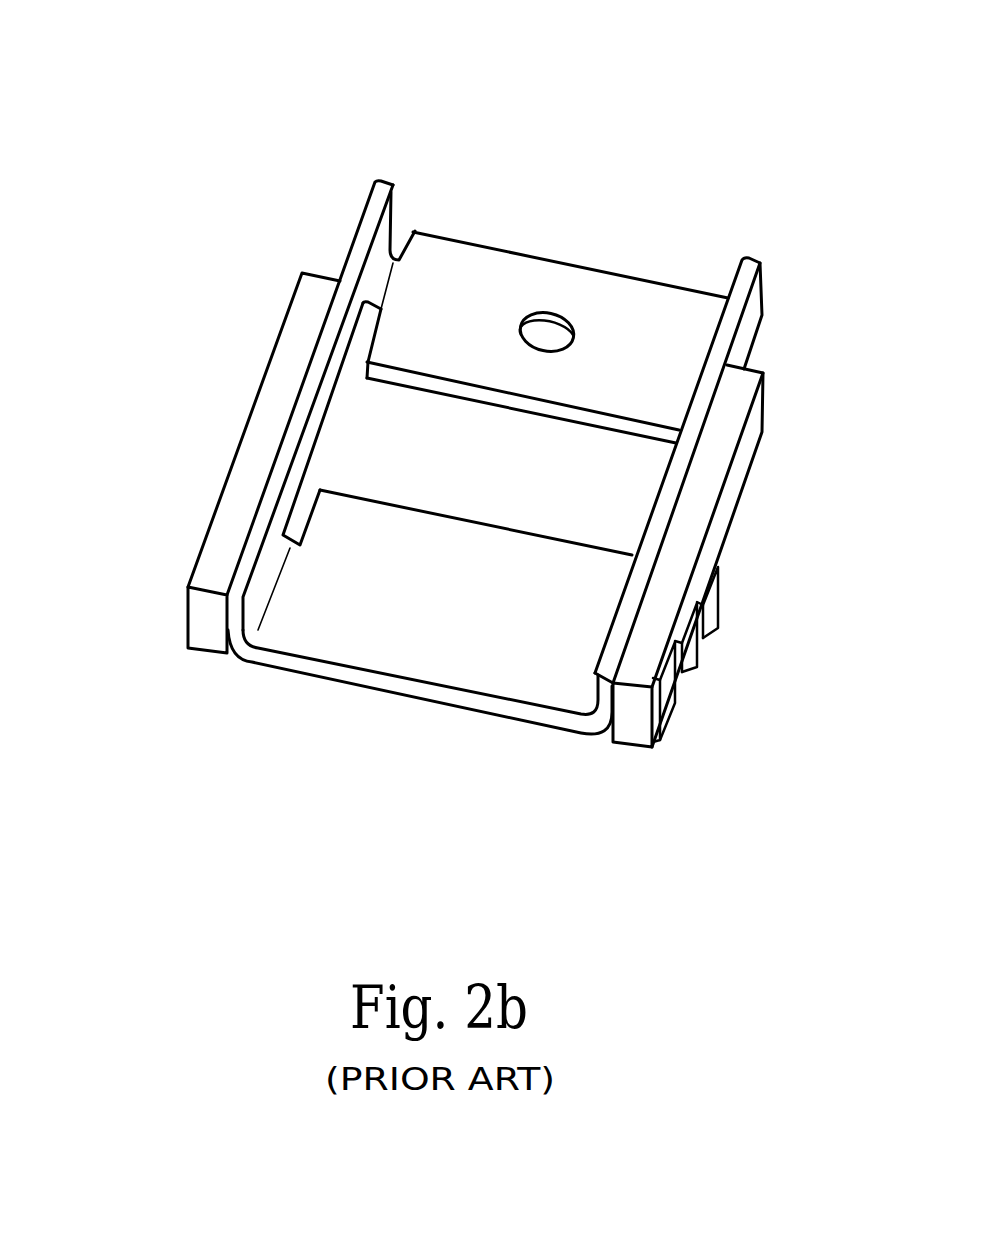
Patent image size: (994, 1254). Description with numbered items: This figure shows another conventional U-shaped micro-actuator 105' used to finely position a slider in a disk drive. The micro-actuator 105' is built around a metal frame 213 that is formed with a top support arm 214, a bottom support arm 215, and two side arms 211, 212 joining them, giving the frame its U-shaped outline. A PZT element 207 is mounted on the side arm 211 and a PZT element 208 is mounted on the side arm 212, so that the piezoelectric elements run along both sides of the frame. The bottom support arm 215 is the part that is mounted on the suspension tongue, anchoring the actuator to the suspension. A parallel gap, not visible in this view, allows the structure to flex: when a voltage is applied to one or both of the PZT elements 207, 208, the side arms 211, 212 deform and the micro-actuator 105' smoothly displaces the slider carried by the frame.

The micro-actuator 105' is at (471, 414).
The PZT element 207 is at (250, 428).
The PZT element 208 is at (680, 533).
The side arm 211 is at (352, 247).
The side arm 212 is at (736, 318).
The metal frame 213 is at (340, 632).
The top support arm 214 is at (672, 312).
The bottom support arm 215 is at (486, 653).